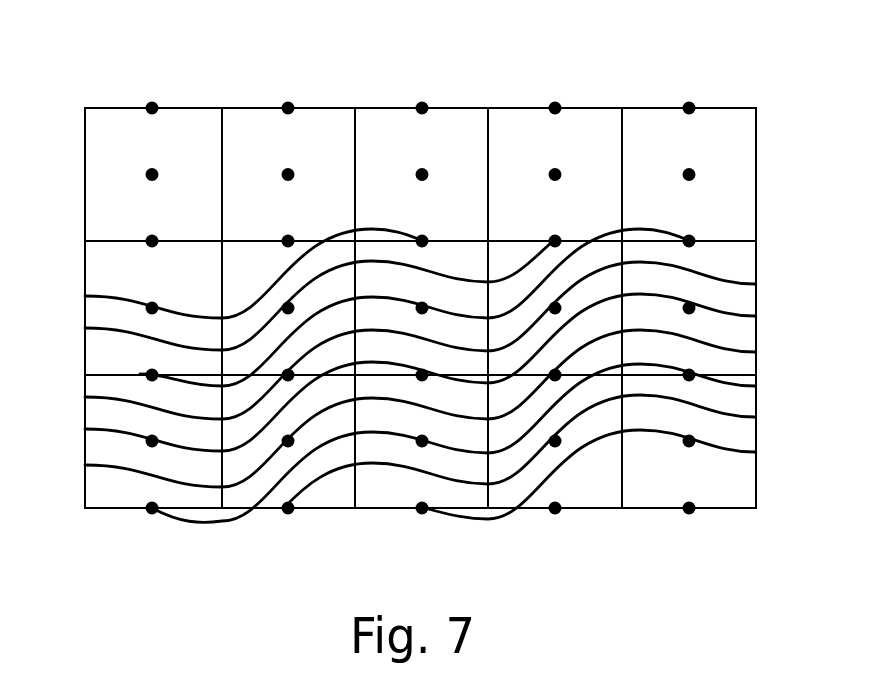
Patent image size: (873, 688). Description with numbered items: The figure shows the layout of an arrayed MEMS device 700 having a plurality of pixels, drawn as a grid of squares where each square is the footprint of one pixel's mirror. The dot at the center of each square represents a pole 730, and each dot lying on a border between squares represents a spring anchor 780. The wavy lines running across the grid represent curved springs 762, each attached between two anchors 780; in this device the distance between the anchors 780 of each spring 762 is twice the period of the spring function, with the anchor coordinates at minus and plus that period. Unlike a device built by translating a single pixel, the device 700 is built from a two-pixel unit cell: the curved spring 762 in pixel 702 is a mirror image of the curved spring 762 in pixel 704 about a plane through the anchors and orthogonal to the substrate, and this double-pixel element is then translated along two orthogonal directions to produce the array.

The arrayed MEMS device 700 is at (58, 153).
The pole 730 is at (554, 174).
The spring anchor 780 is at (690, 108).
The curved spring 762 is at (383, 464).
The pixel 702 is at (450, 482).
The pixel 704 is at (521, 464).